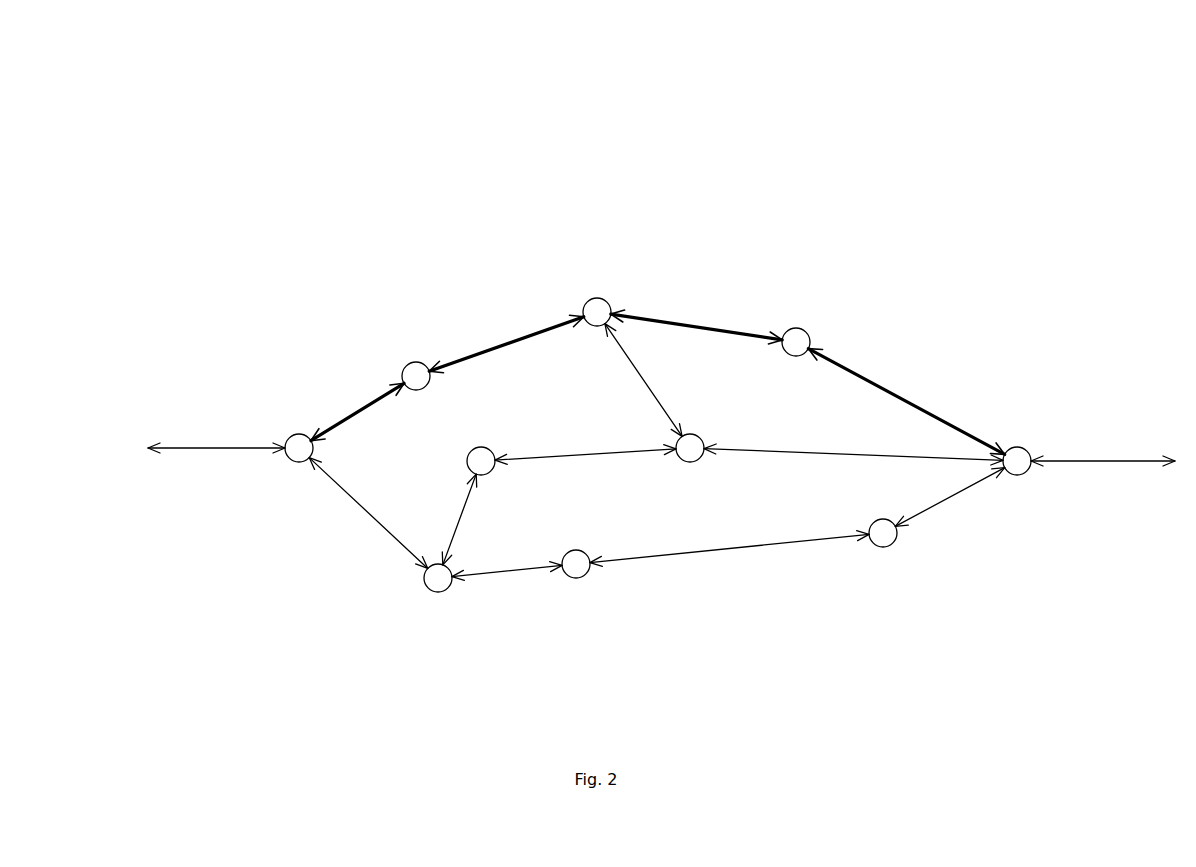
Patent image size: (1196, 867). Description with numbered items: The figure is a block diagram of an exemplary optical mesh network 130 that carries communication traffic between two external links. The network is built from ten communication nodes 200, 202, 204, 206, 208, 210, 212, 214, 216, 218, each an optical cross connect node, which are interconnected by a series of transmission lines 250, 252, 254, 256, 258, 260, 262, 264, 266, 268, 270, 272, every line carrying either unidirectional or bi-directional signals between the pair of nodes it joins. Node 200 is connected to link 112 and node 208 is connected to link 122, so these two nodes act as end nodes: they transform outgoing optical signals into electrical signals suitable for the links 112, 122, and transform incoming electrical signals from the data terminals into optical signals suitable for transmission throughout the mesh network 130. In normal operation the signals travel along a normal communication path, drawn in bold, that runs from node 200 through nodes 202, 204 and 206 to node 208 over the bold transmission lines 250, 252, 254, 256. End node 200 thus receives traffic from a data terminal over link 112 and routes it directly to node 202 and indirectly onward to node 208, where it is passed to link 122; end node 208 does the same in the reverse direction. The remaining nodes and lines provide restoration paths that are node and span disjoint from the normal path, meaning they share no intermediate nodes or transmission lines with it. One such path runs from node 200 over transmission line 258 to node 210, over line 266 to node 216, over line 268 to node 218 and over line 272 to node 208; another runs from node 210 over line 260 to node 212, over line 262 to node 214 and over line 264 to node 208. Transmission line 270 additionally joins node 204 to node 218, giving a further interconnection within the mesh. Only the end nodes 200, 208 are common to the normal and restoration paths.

The optical mesh network 130 is at (832, 230).
The communication node 200 is at (307, 433).
The communication node 202 is at (413, 361).
The communication node 204 is at (605, 298).
The communication node 206 is at (811, 334).
The communication node 208 is at (1020, 446).
The communication node 210 is at (428, 588).
The communication node 212 is at (578, 580).
The communication node 214 is at (898, 541).
The communication node 216 is at (484, 446).
The communication node 218 is at (692, 464).
The link 112 is at (195, 450).
The link 122 is at (1110, 463).
The transmission line 250 is at (356, 413).
The transmission line 252 is at (497, 336).
The transmission line 254 is at (712, 321).
The transmission line 256 is at (920, 403).
The transmission line 258 is at (360, 503).
The transmission line 260 is at (504, 568).
The transmission line 262 is at (740, 556).
The transmission line 264 is at (960, 500).
The transmission line 266 is at (458, 504).
The transmission line 268 is at (593, 454).
The transmission line 270 is at (634, 378).
The transmission line 272 is at (806, 451).